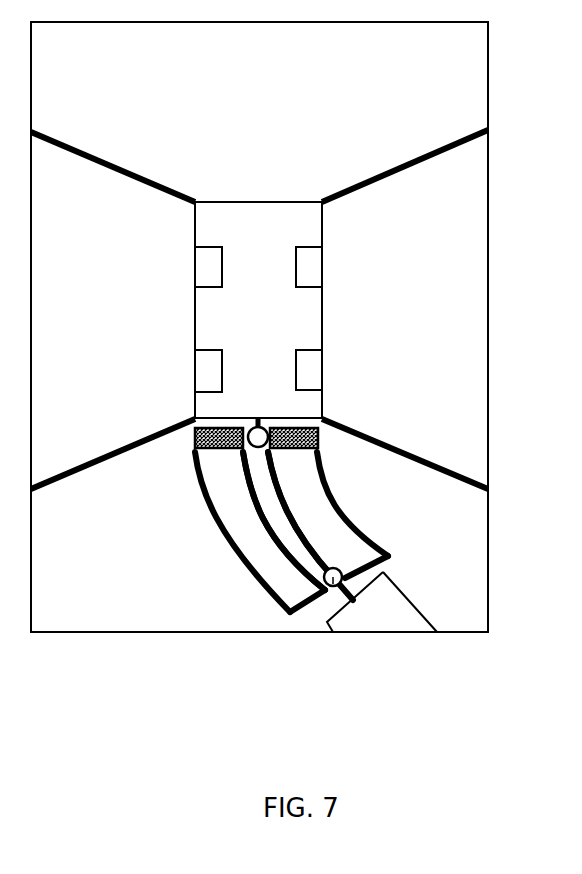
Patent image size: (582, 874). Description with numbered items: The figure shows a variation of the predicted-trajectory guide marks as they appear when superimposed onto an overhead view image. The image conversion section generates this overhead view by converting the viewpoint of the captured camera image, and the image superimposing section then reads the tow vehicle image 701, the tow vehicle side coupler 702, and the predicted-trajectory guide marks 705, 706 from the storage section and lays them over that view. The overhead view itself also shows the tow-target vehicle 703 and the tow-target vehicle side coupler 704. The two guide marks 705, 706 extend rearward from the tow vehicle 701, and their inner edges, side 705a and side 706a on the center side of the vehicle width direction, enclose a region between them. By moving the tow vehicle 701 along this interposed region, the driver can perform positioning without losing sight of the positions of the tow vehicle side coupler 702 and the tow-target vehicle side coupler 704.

The tow vehicle image 701 is at (322, 315).
The tow vehicle side coupler 702 is at (270, 428).
The tow-target vehicle 703 is at (418, 610).
The tow-target vehicle side coupler 704 is at (333, 586).
The predicted-trajectory guide mark 705 is at (218, 590).
The side of predicted-trajectory guide mark 705a is at (220, 510).
The predicted-trajectory guide mark 706 is at (322, 472).
The side of predicted-trajectory guide mark 706a is at (305, 540).